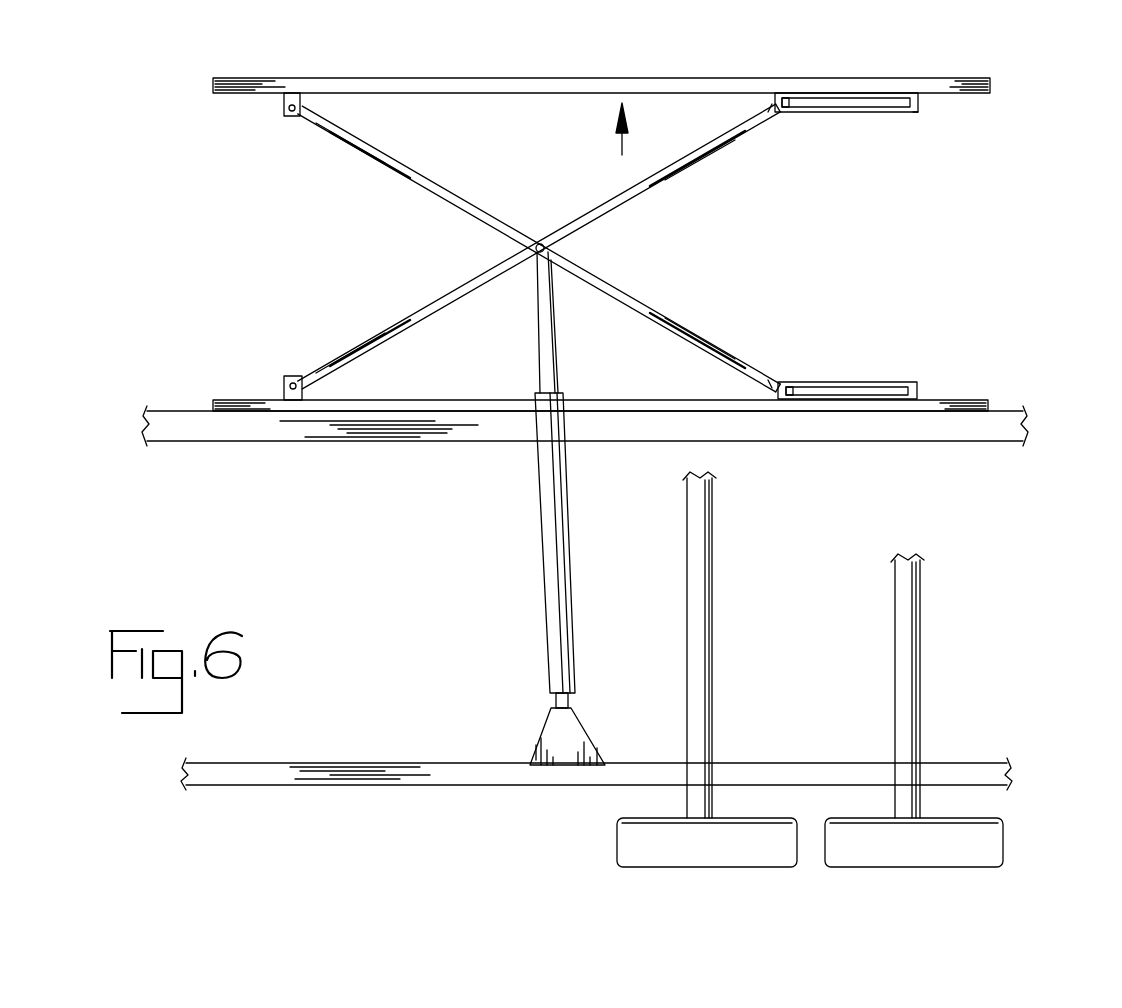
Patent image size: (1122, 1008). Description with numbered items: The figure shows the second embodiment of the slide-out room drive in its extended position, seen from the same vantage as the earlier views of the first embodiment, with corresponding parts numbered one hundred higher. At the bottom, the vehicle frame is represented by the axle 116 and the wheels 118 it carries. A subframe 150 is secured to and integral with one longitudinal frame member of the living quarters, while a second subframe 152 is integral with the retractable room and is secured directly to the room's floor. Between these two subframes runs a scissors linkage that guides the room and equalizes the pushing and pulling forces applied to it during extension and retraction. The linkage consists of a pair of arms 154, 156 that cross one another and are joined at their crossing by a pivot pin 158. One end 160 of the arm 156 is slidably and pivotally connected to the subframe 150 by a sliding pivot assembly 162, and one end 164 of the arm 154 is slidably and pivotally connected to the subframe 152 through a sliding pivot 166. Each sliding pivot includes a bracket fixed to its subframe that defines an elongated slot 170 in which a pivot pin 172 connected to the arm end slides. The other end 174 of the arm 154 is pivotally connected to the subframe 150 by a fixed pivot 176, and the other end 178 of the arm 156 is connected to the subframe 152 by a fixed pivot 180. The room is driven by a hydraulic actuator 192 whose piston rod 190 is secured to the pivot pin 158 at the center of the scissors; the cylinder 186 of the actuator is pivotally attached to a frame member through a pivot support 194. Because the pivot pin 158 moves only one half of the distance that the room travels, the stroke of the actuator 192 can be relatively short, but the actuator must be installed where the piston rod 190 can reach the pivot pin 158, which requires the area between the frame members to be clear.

The axle 116 is at (708, 615).
The wheel 118 is at (630, 845).
The subframe 150 is at (240, 401).
The subframe 152 is at (242, 80).
The arm 154 is at (695, 153).
The arm 156 is at (680, 318).
The pivot pin 158 is at (540, 243).
The end of arm 160 is at (760, 372).
The sliding pivot assembly 162 is at (918, 383).
The end of arm 164 is at (764, 118).
The sliding pivot 166 is at (883, 96).
The elongated slot 170 is at (874, 103).
The pivot pin 172 is at (785, 98).
The end of arm 174 is at (343, 360).
The fixed pivot 176 is at (290, 376).
The end of arm 178 is at (352, 137).
The fixed pivot 180 is at (292, 112).
The cylinder 186 is at (556, 553).
The piston rod 190 is at (548, 356).
The actuator 192 is at (532, 544).
The pivot support 194 is at (570, 738).